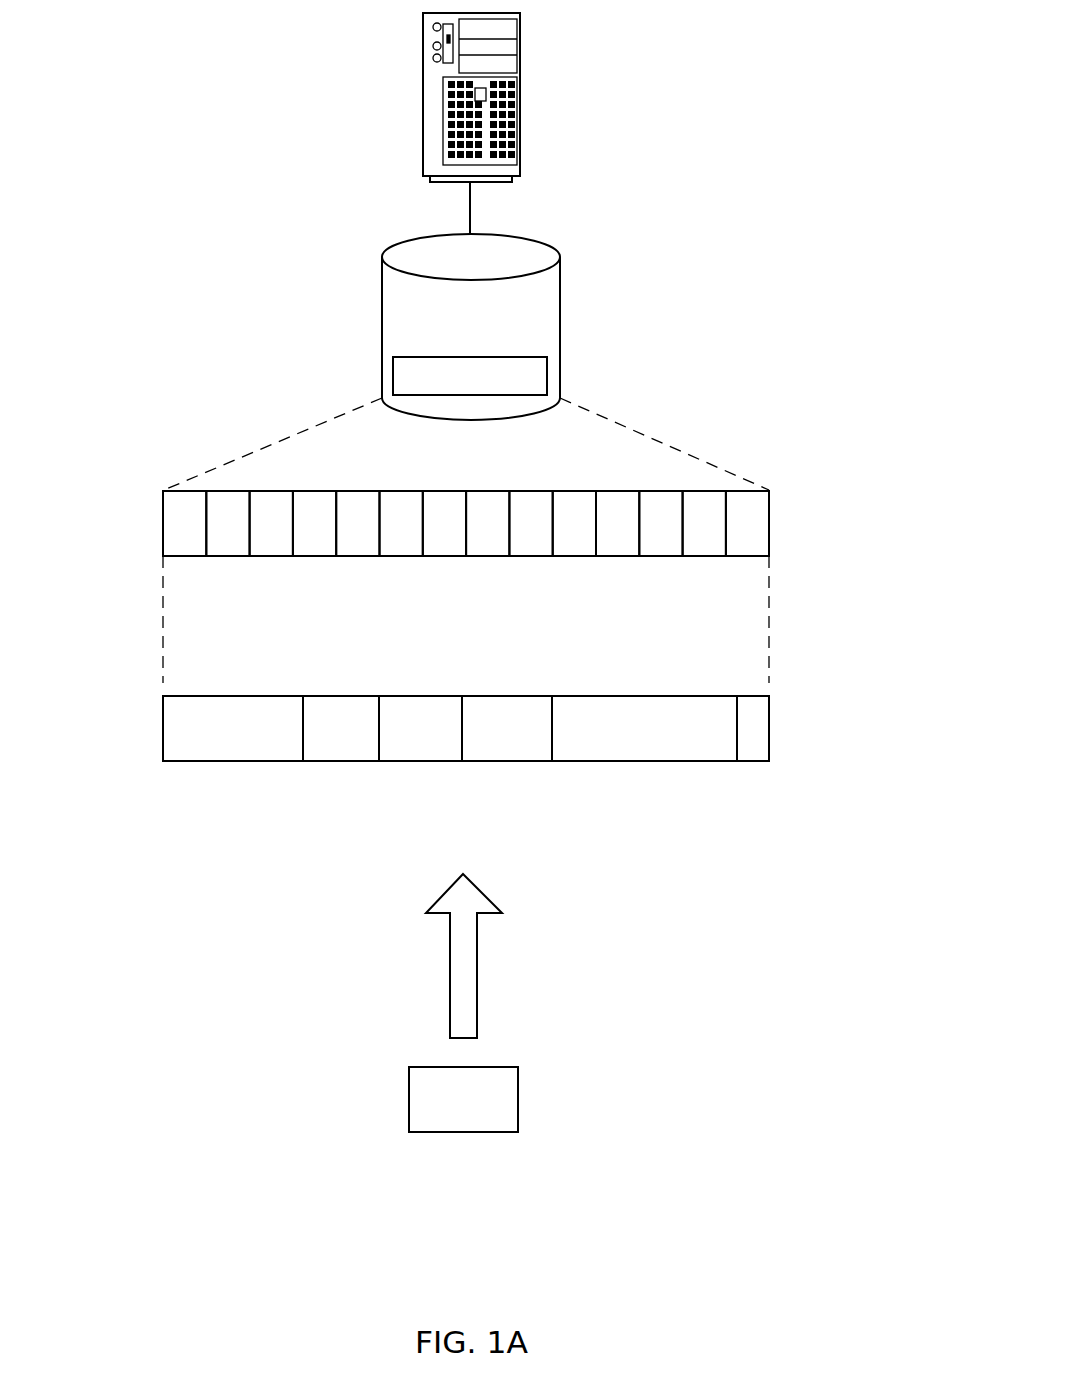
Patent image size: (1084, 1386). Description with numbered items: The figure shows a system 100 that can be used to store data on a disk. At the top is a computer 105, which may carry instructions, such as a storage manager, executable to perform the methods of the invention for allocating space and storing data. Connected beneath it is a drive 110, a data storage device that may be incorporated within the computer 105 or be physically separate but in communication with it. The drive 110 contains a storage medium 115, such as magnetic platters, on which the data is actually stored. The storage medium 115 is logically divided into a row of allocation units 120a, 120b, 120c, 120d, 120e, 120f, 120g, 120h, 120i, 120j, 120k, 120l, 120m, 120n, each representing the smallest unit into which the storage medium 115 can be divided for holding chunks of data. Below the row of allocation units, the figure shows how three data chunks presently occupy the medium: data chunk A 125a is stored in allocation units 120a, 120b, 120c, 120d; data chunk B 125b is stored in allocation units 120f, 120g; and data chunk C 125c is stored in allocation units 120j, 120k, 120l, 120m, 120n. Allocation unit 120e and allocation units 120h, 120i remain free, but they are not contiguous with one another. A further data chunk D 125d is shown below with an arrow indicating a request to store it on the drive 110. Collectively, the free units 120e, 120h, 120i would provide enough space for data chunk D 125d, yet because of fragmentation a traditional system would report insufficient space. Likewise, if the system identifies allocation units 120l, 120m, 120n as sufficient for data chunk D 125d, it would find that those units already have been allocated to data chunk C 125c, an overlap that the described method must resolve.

The system 100 is at (735, 1272).
The computer 105 is at (523, 96).
The drive 110 is at (560, 326).
The storage medium 115 is at (470, 376).
The allocation unit 120a is at (180, 557).
The allocation unit 120b is at (227, 557).
The allocation unit 120c is at (270, 557).
The allocation unit 120d is at (313, 557).
The allocation unit 120e is at (355, 557).
The allocation unit 120f is at (398, 557).
The allocation unit 120g is at (441, 557).
The allocation unit 120h is at (484, 557).
The allocation unit 120i is at (527, 557).
The allocation unit 120j is at (570, 557).
The allocation unit 120k is at (614, 557).
The allocation unit 120l is at (657, 557).
The allocation unit 120m is at (700, 557).
The allocation unit 120n is at (745, 557).
The data chunk A 125a is at (229, 762).
The data chunk B 125b is at (418, 762).
The data chunk C 125c is at (642, 762).
The data chunk D 125d is at (462, 1133).